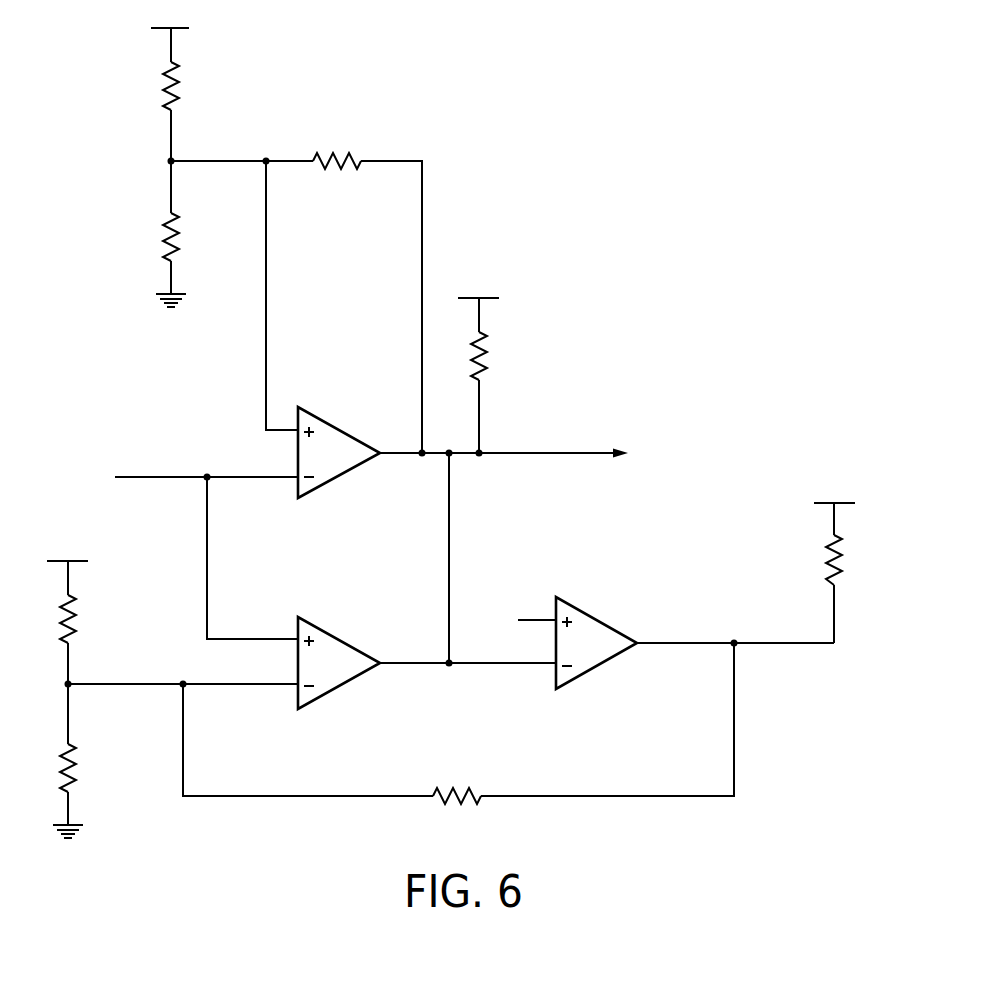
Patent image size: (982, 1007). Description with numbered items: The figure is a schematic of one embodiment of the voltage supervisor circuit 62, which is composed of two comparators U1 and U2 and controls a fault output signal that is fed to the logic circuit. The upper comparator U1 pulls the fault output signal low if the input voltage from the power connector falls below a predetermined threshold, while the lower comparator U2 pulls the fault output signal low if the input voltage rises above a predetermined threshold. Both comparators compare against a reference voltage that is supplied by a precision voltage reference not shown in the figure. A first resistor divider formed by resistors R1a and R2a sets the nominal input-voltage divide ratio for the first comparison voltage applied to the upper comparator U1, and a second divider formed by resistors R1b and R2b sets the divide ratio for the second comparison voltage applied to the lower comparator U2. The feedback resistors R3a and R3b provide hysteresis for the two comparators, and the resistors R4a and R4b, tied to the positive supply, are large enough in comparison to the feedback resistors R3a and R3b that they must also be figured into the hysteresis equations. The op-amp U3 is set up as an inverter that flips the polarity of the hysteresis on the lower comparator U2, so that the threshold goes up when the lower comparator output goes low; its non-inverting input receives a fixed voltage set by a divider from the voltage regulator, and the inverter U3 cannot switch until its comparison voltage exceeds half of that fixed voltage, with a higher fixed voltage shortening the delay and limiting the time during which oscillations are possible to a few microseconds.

The voltage supervisor circuit 62 is at (462, 419).
The resistor R1a is at (189, 86).
The resistor R2a is at (189, 237).
The feedback resistor R3a is at (337, 145).
The resistor R4a is at (498, 356).
The resistor R1b is at (85, 619).
The resistor R2b is at (85, 768).
The feedback resistor R3b is at (457, 812).
The resistor R4b is at (852, 560).
The upper comparator U1 is at (339, 452).
The lower comparator U2 is at (339, 663).
The inverter U3 is at (596, 643).